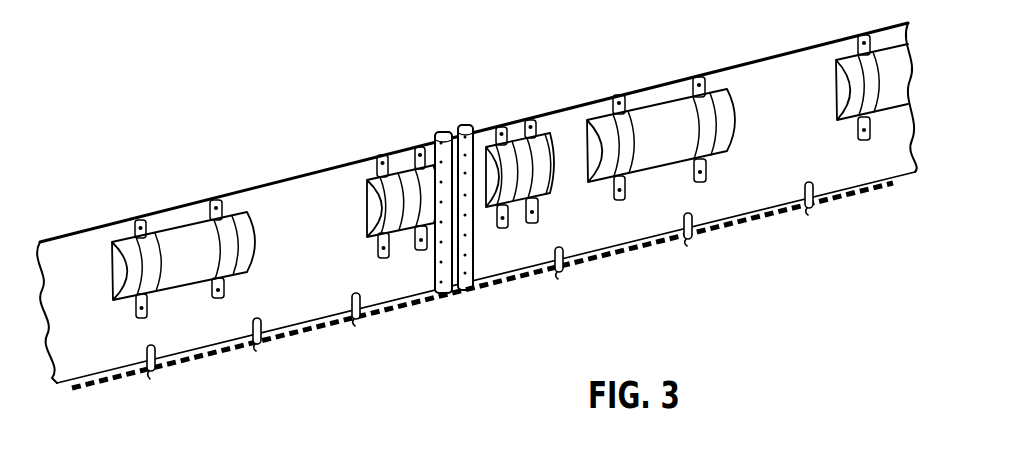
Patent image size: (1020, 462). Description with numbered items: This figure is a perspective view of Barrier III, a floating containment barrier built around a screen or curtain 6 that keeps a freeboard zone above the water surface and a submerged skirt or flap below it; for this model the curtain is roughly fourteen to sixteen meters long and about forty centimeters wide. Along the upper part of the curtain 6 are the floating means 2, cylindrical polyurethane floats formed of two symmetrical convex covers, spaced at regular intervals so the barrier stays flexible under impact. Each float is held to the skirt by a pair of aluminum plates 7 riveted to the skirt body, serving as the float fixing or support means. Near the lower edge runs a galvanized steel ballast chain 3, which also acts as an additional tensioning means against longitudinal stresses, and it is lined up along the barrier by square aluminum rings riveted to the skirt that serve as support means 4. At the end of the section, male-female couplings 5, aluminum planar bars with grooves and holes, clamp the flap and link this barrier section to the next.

The floating means 2 is at (193, 262).
The ballast chain 3 is at (226, 352).
The support means 4 is at (152, 375).
The male-female couplings 5 is at (463, 125).
The screen or curtain 6 is at (324, 257).
The aluminum plates 7 is at (618, 95).